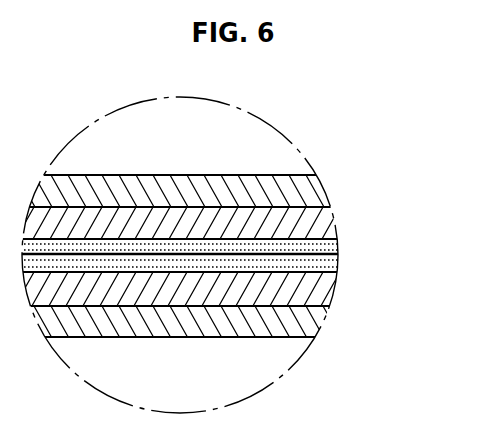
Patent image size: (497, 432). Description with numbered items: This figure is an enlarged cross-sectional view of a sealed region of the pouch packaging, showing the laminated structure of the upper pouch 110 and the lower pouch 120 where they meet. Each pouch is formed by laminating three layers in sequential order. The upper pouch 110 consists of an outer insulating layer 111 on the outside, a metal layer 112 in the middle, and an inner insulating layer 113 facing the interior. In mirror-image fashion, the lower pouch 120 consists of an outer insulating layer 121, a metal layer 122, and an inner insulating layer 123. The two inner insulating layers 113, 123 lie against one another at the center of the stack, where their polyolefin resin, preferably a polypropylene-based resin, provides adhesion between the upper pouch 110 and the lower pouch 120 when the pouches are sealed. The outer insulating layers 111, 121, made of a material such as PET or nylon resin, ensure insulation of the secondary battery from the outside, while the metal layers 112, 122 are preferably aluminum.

The upper pouch 110 is at (397, 190).
The outer insulating layer 111 is at (320, 194).
The metal layer 112 is at (321, 222).
The inner insulating layer 113 is at (321, 247).
The lower pouch 120 is at (397, 267).
The outer insulating layer 121 is at (322, 325).
The metal layer 122 is at (320, 297).
The inner insulating layer 123 is at (321, 265).